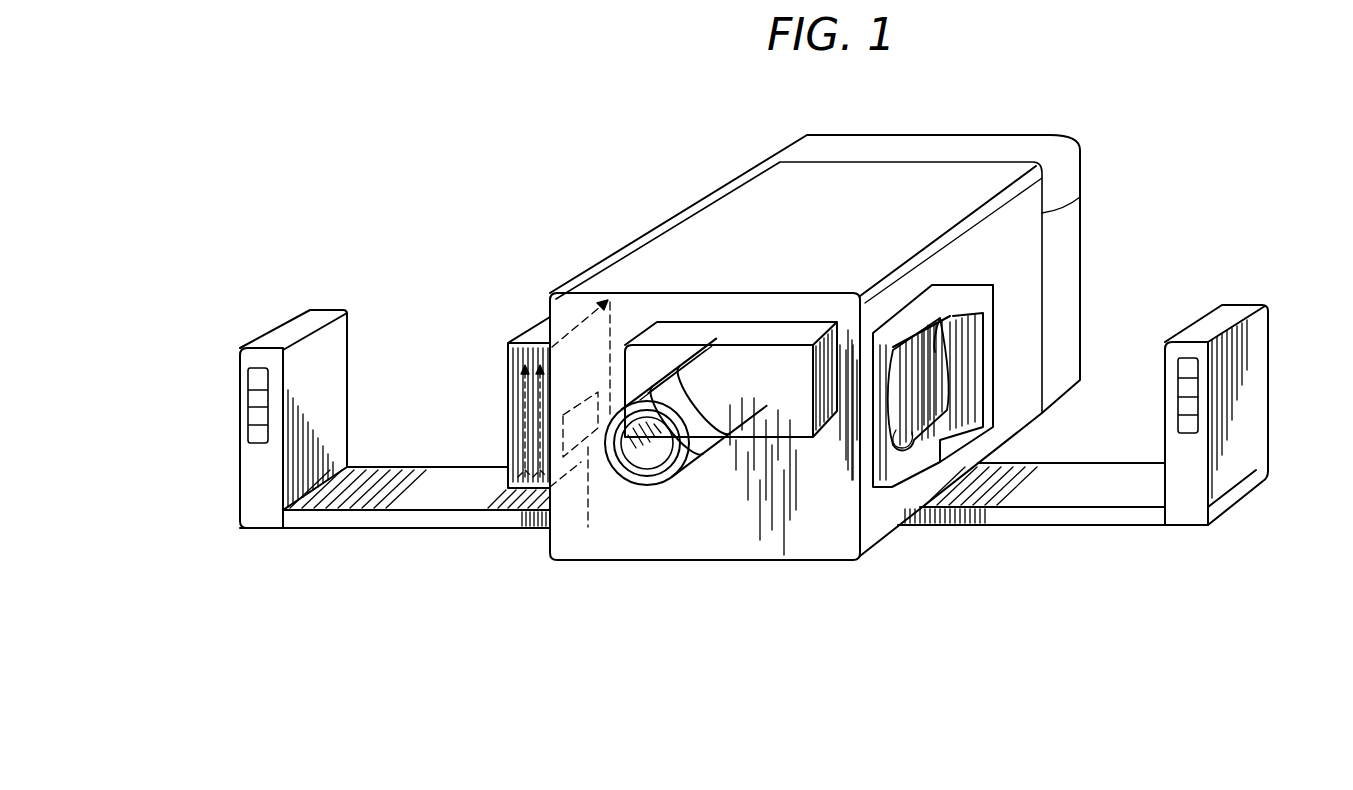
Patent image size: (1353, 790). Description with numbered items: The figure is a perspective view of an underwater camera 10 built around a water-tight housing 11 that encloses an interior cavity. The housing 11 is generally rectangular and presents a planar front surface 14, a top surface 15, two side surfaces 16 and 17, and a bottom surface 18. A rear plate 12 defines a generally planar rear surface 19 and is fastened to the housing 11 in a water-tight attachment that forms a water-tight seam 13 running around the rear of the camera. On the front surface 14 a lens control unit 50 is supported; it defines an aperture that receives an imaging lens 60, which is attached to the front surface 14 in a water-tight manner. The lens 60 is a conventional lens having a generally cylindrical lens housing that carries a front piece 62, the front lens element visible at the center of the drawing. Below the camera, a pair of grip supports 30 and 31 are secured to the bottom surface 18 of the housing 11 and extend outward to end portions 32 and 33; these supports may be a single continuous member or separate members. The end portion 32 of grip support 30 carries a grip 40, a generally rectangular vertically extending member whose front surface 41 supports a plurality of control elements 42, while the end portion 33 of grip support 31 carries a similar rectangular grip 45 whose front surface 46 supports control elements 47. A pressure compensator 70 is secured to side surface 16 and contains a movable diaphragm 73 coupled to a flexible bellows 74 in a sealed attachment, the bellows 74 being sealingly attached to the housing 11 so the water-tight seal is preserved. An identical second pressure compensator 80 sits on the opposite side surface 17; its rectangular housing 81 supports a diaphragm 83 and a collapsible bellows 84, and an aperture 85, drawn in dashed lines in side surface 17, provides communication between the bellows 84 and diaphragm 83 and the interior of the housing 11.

The underwater camera 10 is at (1083, 237).
The water-tight housing 11 is at (747, 213).
The rear plate 12 is at (1062, 275).
The water-tight seam 13 is at (1073, 200).
The front surface 14 is at (703, 547).
The top surface 15 is at (832, 182).
The side surface 16 is at (1018, 330).
The side surface 17 is at (637, 240).
The bottom surface 18 is at (788, 565).
The rear surface 19 is at (1080, 347).
The grip support 30 is at (1092, 527).
The grip support 31 is at (387, 530).
The end portion 32 is at (1168, 527).
The end portion 33 is at (273, 530).
The grip 40 is at (1243, 430).
The front surface 41 is at (1192, 472).
The control elements 42 is at (1180, 400).
The grip 45 is at (253, 468).
The front surface 46 is at (253, 500).
The control elements 47 is at (247, 393).
The lens control unit 50 is at (768, 420).
The imaging lens 60 is at (696, 457).
The front piece 62 is at (648, 452).
The pressure compensator 70 is at (915, 467).
The movable diaphragm 73 is at (960, 432).
The flexible bellows 74 is at (908, 445).
The second pressure compensator 80 is at (505, 400).
The rectangular housing 81 is at (510, 357).
The diaphragm 83 is at (512, 432).
The collapsible bellows 84 is at (507, 513).
The aperture 85 is at (583, 470).